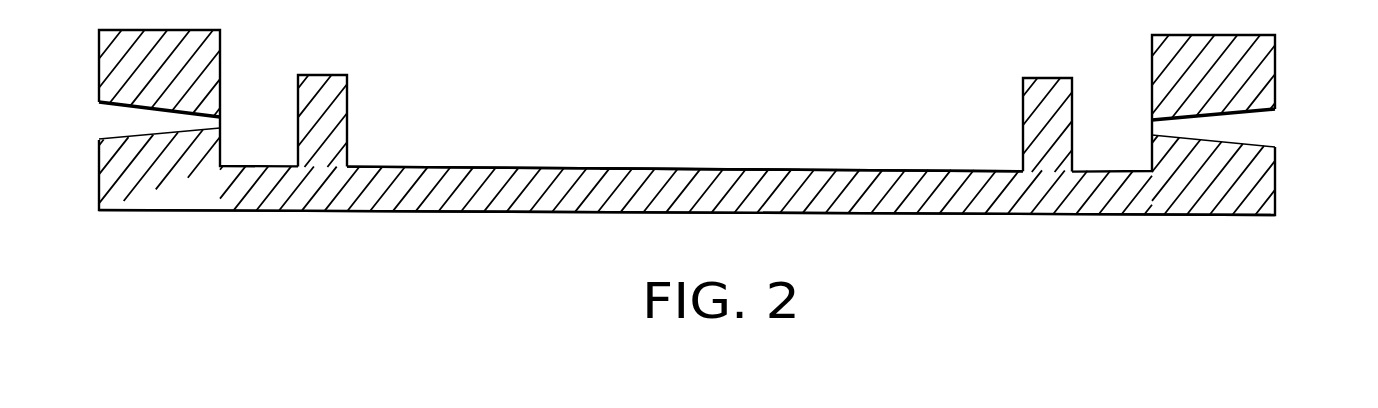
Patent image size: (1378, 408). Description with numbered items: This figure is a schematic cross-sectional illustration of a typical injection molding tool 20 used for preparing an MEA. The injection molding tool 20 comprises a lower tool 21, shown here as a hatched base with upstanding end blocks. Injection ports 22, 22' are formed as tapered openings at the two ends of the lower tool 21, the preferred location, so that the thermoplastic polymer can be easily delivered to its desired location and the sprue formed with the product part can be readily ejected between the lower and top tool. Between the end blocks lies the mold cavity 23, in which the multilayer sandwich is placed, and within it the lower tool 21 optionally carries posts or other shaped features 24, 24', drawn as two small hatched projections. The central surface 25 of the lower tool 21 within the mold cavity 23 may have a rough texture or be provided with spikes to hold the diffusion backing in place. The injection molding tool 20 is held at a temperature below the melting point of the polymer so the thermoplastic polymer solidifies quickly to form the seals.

The injection molding tool 20 is at (498, 234).
The lower tool 21 is at (252, 211).
The injection port 22 is at (138, 106).
The injection port 22' is at (1244, 114).
The mold cavity 23 is at (676, 129).
The post 24 is at (345, 98).
The post 24' is at (1024, 106).
The central surface 25 is at (847, 168).